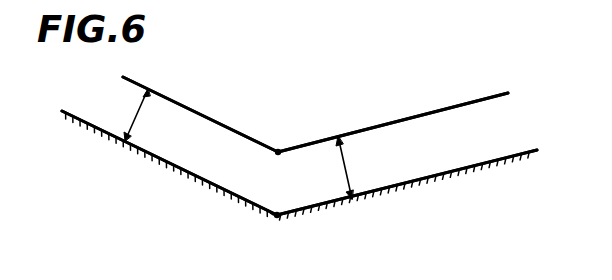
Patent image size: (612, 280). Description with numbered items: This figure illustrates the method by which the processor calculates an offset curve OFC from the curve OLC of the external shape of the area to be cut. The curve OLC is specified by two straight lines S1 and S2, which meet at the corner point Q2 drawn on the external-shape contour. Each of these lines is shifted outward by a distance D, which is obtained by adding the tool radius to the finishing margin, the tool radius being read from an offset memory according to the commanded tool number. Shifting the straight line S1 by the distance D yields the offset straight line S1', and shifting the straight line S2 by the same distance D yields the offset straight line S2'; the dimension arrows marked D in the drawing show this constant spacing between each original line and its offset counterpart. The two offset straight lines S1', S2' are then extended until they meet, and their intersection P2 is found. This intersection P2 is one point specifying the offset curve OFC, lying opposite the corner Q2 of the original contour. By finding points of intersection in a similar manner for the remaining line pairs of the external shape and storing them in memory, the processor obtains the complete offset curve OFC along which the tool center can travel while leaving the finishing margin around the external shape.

The offset straight line S1' is at (200, 104).
The offset straight line S2' is at (393, 106).
The offset curve OFC is at (243, 135).
The curve of the external shape OLC is at (222, 190).
The straight line S1 is at (169, 166).
The straight line S2 is at (407, 198).
The intersection P2 is at (288, 164).
The corner point of original contour Q2 is at (286, 227).
The offset distance D is at (241, 144).